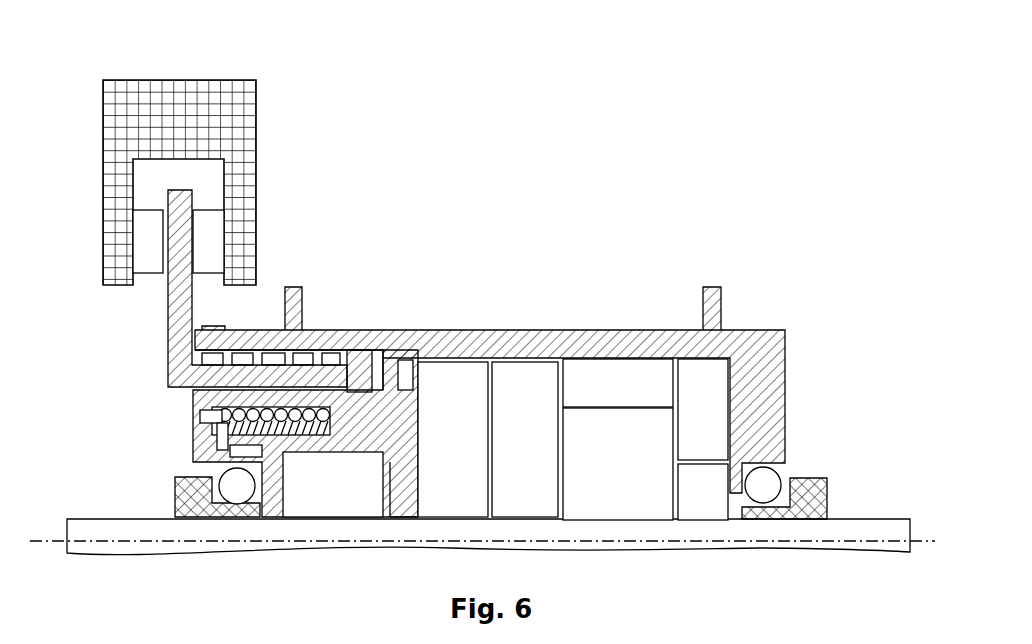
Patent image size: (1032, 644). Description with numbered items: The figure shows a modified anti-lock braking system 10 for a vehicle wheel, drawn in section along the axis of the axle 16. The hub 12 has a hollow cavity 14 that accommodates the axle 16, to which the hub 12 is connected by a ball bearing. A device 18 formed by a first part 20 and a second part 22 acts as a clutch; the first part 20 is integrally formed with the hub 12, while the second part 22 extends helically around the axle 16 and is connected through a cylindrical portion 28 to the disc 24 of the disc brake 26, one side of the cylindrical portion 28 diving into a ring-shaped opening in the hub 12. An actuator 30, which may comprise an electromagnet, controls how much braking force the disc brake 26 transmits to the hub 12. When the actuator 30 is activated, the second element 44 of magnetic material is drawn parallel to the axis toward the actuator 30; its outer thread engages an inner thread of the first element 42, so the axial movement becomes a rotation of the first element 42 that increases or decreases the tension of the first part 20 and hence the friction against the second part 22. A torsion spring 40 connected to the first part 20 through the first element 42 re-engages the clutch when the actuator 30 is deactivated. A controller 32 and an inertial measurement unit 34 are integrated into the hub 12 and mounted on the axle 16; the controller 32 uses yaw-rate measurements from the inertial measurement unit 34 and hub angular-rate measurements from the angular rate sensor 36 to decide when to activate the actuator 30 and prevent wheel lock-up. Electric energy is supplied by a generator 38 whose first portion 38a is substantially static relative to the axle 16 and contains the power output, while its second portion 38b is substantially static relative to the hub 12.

The anti-lock braking system 10 is at (570, 90).
The hub 12 is at (570, 330).
The hollow cavity 14 is at (624, 532).
The axle 16 is at (135, 517).
The device 18 is at (161, 420).
The first part 20 is at (304, 348).
The second part 22 is at (181, 394).
The disc 24 is at (168, 315).
The disc brake 26 is at (294, 139).
The cylindrical portion 28 is at (260, 357).
The actuator 30 is at (333, 484).
The controller 32 is at (453, 439).
The inertial measurement unit 34 is at (525, 439).
The angular rate sensor 36 is at (703, 439).
The generator 38 is at (639, 374).
The first portion 38a is at (618, 464).
The second portion 38b is at (618, 383).
The torsion spring 40 is at (223, 430).
The first element 42 is at (408, 356).
The second element 44 is at (400, 518).